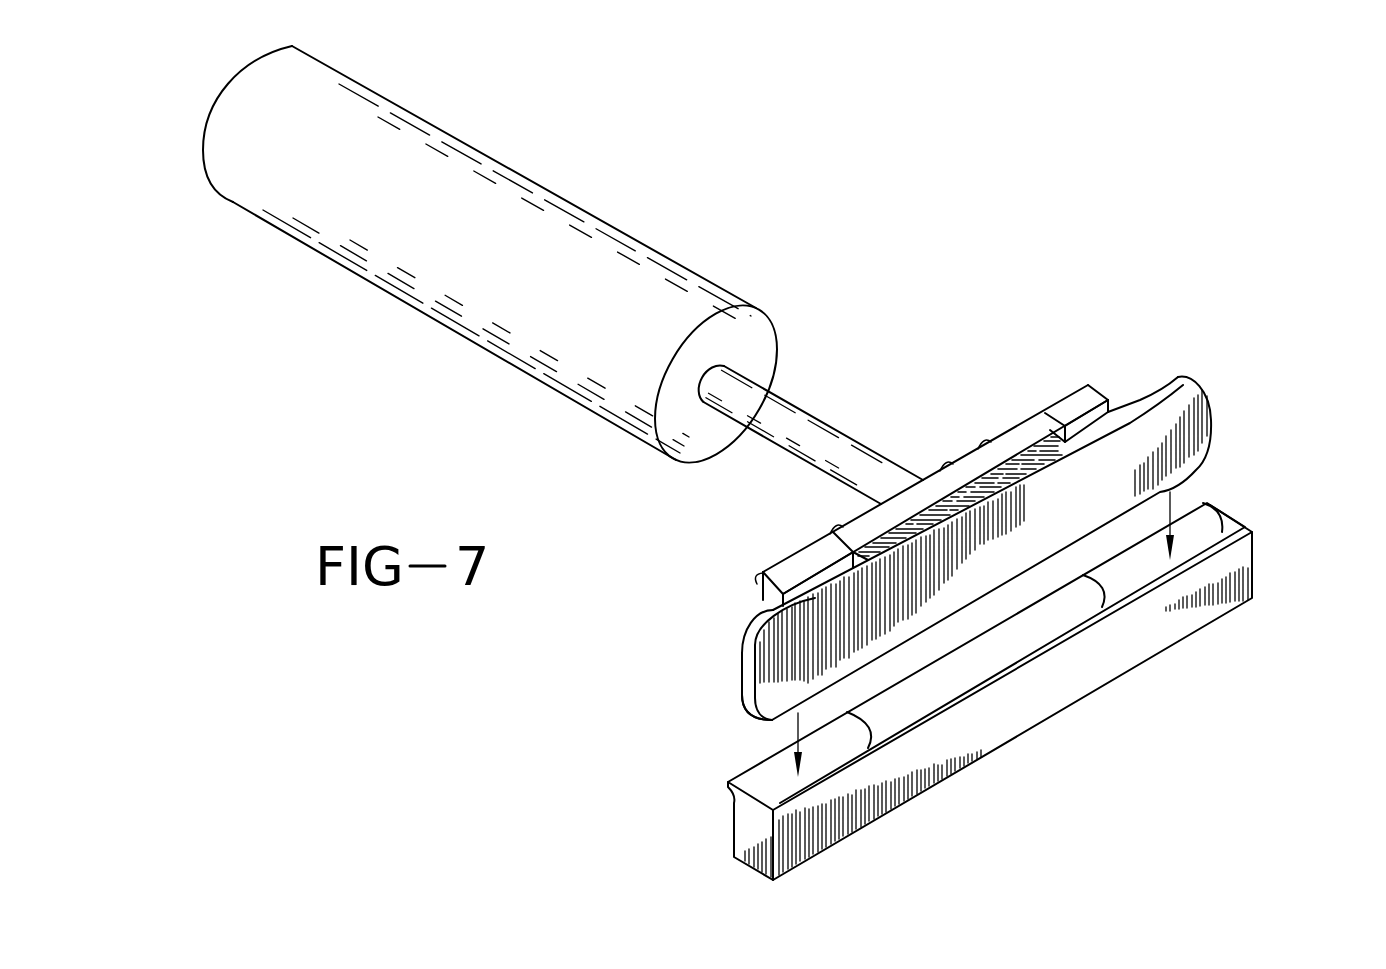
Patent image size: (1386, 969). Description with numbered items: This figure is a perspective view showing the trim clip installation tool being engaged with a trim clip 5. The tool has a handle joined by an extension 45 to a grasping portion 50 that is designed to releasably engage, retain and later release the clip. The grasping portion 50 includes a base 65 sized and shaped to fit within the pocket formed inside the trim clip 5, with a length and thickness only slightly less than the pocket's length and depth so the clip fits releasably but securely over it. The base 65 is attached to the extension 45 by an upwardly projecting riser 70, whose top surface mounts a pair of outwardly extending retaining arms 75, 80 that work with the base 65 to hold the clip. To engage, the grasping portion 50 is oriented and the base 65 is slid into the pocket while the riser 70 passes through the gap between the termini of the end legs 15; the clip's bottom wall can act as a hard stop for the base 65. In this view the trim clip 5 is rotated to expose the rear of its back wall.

The trim clip 5 is at (1260, 535).
The end legs 15 is at (1197, 525).
The extension 45 is at (823, 447).
The grasping portion 50 is at (1232, 366).
The base 65 is at (772, 658).
The riser 70 is at (972, 487).
The retaining arm 75 is at (805, 558).
The retaining arm 80 is at (1072, 405).